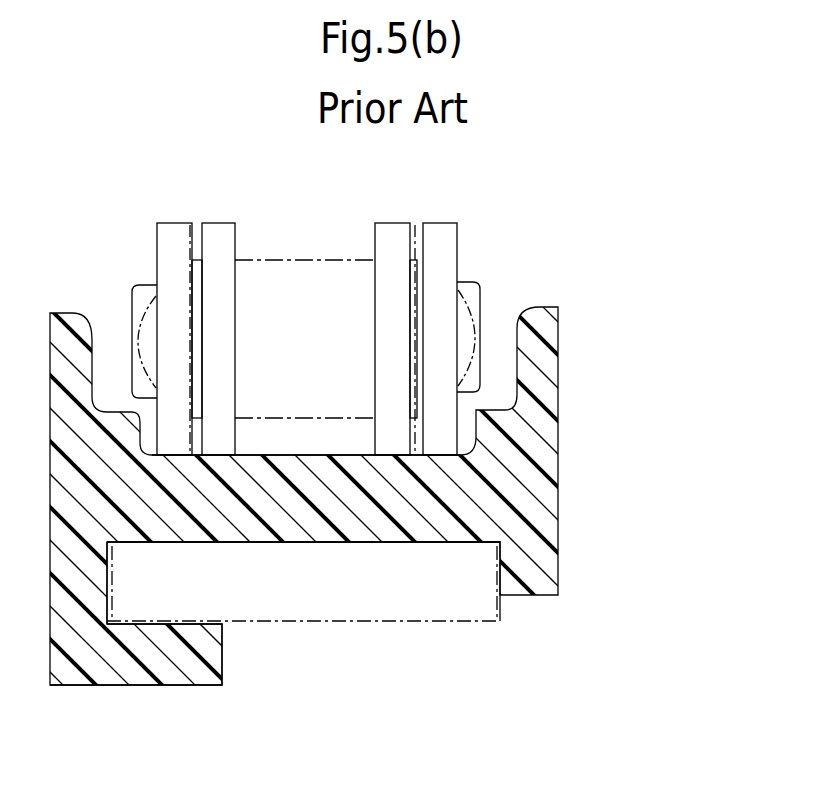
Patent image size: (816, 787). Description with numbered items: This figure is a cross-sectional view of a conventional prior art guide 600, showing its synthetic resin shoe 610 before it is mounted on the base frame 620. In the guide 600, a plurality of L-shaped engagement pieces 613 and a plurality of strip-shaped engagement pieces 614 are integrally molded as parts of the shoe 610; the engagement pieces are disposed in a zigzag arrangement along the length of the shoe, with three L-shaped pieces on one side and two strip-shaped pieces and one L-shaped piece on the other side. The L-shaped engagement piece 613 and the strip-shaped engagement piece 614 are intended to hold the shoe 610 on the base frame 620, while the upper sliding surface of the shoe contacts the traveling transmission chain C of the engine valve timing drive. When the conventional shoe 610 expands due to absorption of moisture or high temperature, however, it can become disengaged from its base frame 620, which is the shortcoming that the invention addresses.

The guide 600 is at (667, 403).
The conventional shoe 610 is at (530, 436).
The L-shaped engagement piece 613 is at (185, 660).
The strip-shaped engagement piece 614 is at (527, 570).
The base frame 620 is at (467, 603).
The chain C is at (438, 238).